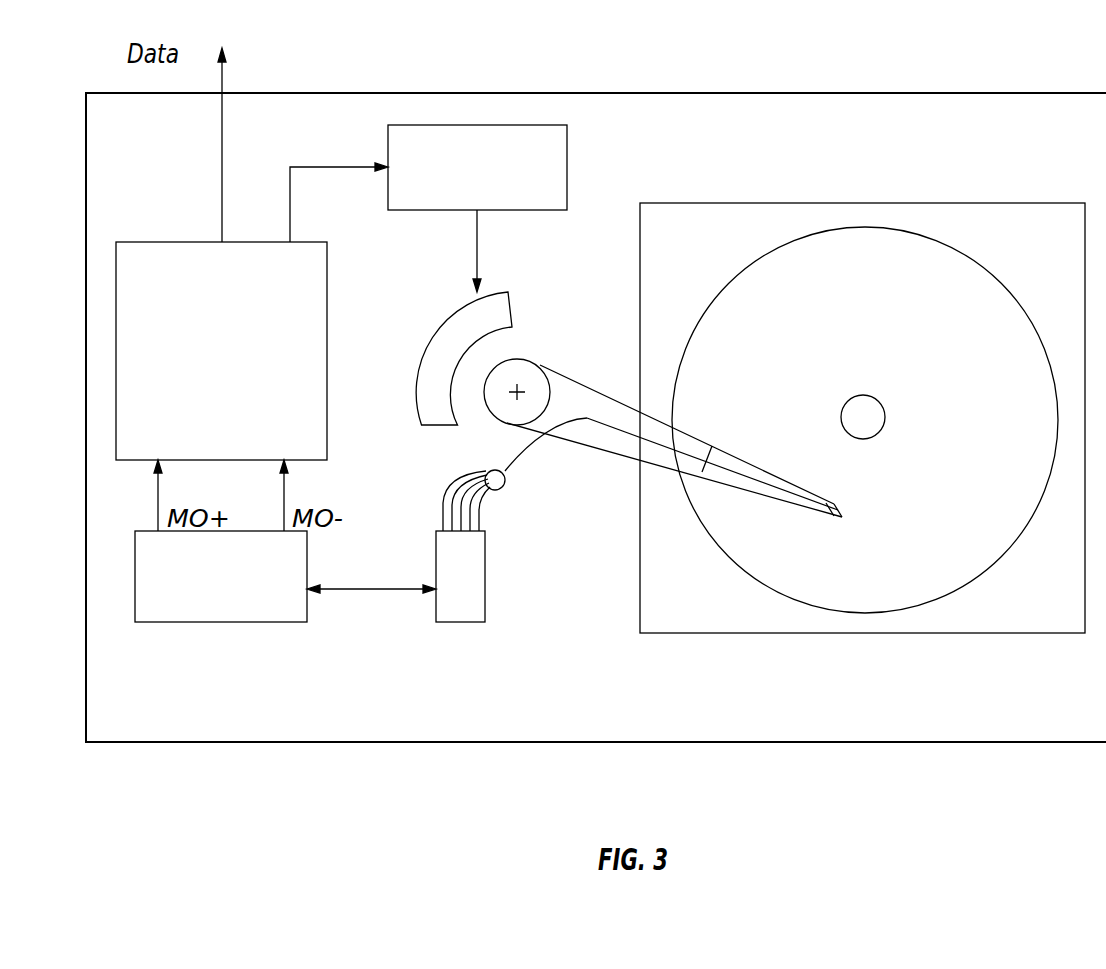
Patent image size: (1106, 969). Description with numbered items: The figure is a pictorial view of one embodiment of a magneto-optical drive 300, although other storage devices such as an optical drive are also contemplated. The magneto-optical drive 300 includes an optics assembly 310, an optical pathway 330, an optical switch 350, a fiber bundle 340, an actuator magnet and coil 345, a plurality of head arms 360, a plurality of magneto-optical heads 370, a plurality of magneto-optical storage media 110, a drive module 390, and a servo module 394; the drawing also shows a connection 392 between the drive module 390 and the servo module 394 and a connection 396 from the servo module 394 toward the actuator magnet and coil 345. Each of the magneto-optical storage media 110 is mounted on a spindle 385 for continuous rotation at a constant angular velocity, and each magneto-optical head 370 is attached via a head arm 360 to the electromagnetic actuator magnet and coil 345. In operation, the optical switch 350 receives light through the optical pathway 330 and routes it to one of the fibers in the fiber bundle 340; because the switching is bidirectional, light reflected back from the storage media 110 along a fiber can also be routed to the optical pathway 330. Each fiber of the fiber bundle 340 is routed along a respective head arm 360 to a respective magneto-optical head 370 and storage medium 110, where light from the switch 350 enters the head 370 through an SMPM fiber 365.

The magneto-optical storage medium 110 is at (988, 299).
The magneto-optical drive 300 is at (987, 790).
The optics assembly 310 is at (172, 612).
The optical pathway 330 is at (364, 589).
The fiber bundle 340 is at (484, 514).
The actuator magnet and coil 345 is at (496, 312).
The optical switch 350 is at (472, 593).
The head arm 360 is at (683, 433).
The SMPM fiber 365 is at (738, 457).
The magneto-optical head 370 is at (845, 509).
The spindle 385 is at (860, 417).
The drive module 390 is at (328, 325).
The drive module to servo module connection 392 is at (316, 165).
The servo module 394 is at (568, 166).
The servo control signal 396 is at (478, 252).